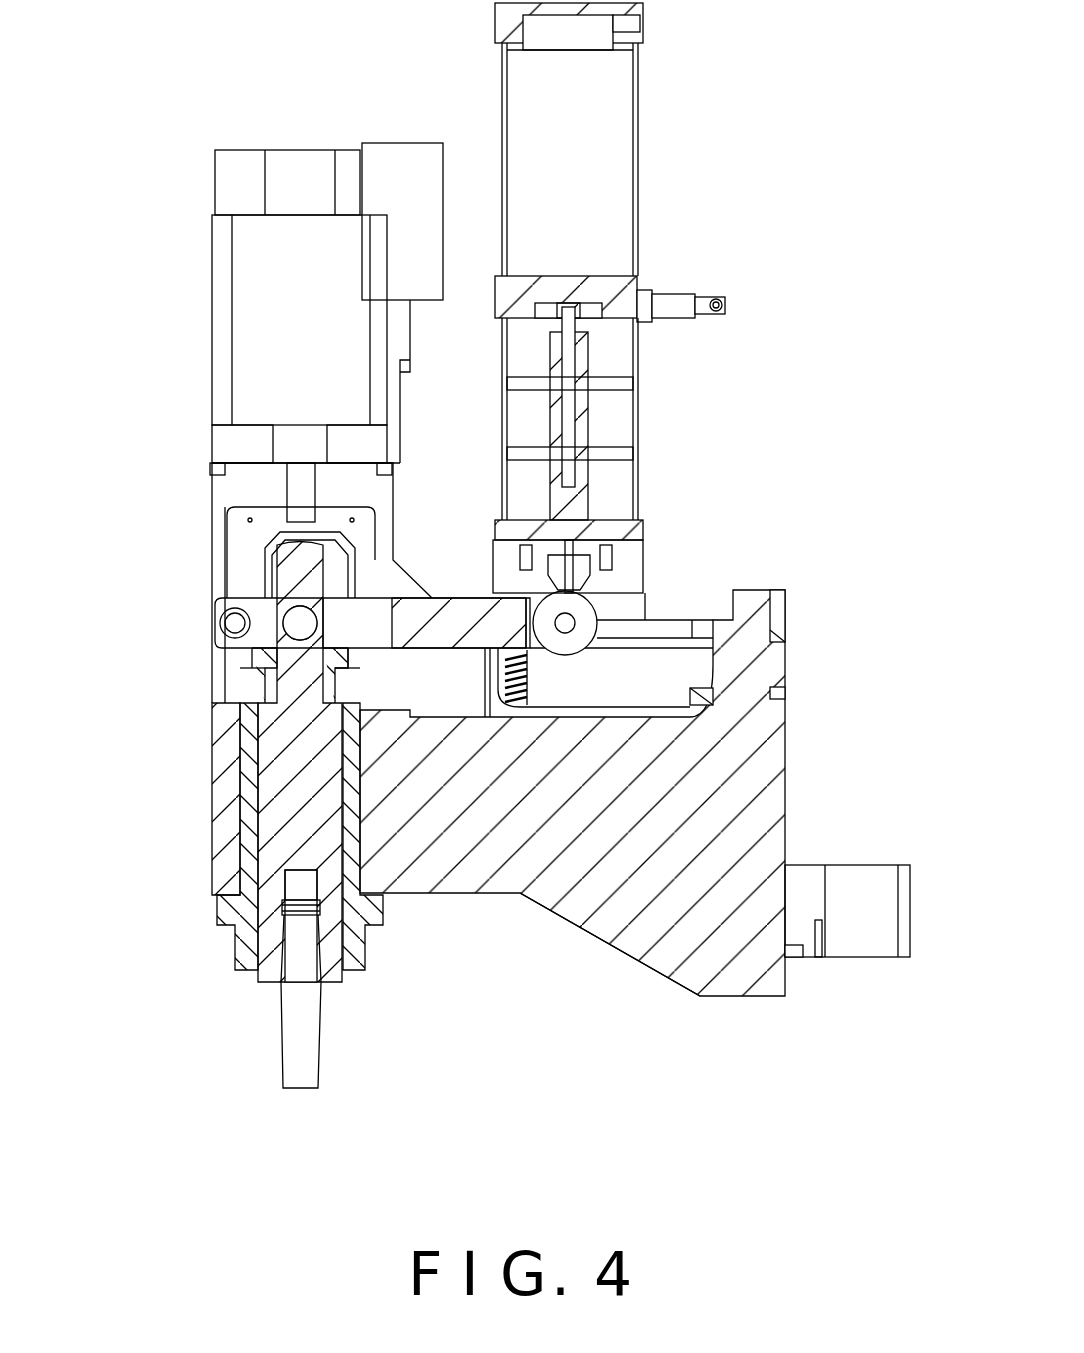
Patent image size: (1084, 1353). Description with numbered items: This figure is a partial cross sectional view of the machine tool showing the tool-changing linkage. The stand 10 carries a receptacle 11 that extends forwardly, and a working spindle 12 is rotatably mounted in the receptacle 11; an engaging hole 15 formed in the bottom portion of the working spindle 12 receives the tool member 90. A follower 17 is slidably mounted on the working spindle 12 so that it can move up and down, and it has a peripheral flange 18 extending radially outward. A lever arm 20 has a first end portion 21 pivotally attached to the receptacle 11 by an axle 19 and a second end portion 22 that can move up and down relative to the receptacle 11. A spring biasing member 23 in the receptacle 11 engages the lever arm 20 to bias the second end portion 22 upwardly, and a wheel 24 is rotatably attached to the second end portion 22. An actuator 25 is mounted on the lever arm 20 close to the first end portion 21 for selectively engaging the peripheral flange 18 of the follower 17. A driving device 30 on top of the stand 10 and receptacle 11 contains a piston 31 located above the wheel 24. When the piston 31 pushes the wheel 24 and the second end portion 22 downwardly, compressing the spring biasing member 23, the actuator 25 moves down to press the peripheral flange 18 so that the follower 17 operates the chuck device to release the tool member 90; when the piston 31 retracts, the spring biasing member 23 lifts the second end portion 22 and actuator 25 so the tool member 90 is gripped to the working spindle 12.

The stand 10 is at (797, 930).
The receptacle 11 is at (577, 903).
The working spindle 12 is at (268, 980).
The engaging hole 15 is at (313, 962).
The follower 17 is at (223, 615).
The peripheral flange 18 is at (257, 647).
The axle 19 is at (262, 618).
The lever arm 20 is at (447, 598).
The first end portion 21 is at (215, 608).
The second end portion 22 is at (510, 545).
The spring biasing member 23 is at (527, 680).
The wheel 24 is at (593, 610).
The actuator 25 is at (303, 632).
The driving device 30 is at (610, 180).
The piston 31 is at (590, 583).
The tool member 90 is at (295, 1082).